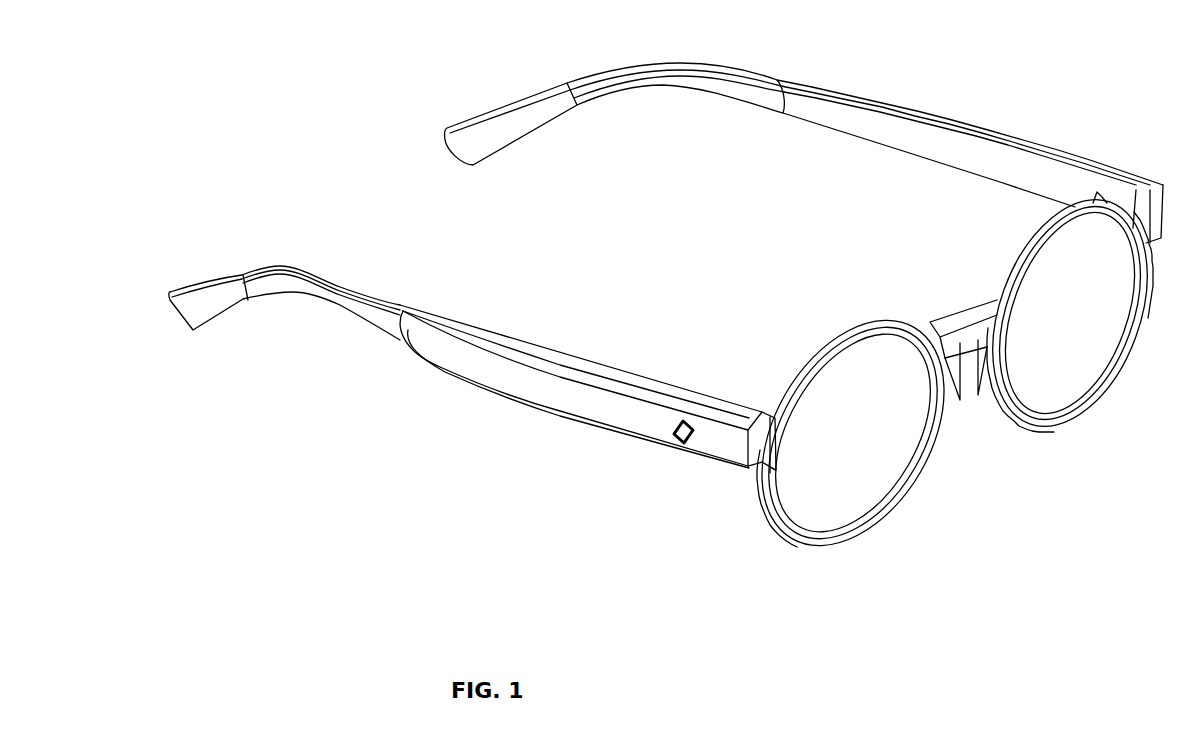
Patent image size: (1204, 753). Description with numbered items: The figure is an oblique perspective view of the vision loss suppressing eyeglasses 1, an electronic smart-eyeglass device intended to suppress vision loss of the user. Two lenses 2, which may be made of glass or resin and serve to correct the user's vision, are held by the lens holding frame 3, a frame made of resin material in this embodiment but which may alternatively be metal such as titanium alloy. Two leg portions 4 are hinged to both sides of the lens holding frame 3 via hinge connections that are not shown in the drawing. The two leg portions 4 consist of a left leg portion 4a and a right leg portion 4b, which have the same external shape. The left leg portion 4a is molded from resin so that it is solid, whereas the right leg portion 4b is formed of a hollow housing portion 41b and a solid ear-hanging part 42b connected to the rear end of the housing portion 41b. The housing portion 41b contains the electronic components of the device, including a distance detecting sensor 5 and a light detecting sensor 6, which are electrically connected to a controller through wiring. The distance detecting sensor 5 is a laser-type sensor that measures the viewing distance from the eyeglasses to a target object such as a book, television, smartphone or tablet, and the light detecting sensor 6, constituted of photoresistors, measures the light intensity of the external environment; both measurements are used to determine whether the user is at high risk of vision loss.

The vision loss suppressing eyeglasses 1 is at (1018, 470).
The lenses 2 is at (870, 490).
The lens holding frame 3 is at (957, 328).
The leg portions 4 is at (666, 284).
The left leg portion 4a is at (943, 140).
The right leg portion 4b is at (392, 282).
The housing portion 41b is at (555, 402).
The ear-hanging part 42b is at (293, 294).
The distance detecting sensor 5 is at (760, 455).
The light detecting sensor 6 is at (678, 445).